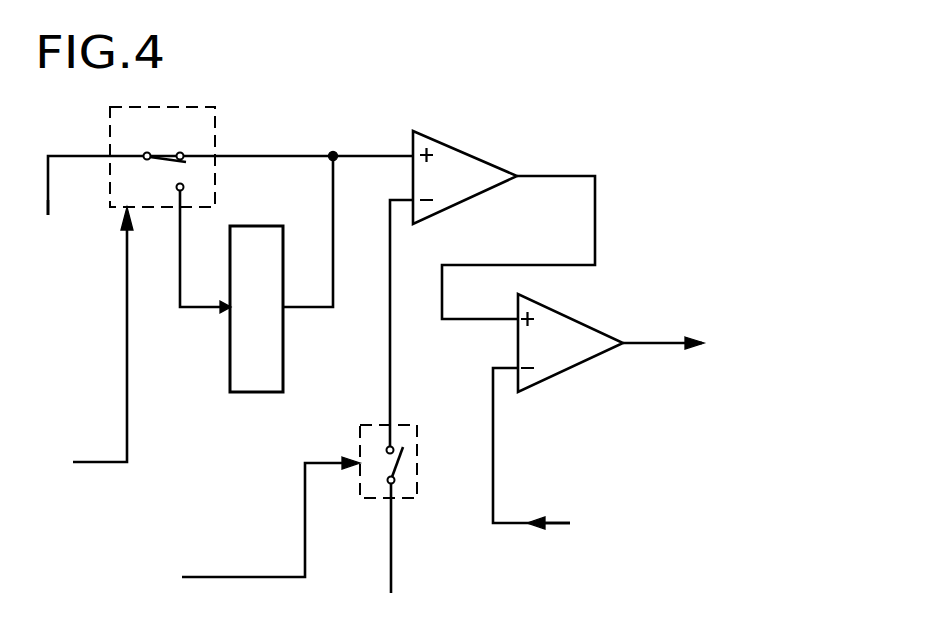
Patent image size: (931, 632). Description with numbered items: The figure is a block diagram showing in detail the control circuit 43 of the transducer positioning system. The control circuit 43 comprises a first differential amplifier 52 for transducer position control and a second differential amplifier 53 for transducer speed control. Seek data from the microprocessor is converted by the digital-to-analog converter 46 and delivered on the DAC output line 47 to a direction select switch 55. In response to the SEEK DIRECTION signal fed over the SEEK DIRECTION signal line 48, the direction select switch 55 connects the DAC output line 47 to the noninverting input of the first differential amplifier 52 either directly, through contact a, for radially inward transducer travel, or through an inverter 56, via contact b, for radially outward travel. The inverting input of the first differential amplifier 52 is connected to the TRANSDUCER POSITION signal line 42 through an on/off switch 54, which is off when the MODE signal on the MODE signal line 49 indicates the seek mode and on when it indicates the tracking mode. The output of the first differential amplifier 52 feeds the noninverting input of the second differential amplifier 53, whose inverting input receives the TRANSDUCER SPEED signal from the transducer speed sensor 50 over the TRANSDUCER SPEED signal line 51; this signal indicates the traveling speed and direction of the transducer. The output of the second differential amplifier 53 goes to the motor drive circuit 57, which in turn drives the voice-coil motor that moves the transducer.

The TRANSDUCER POSITION signal line 42 is at (390, 501).
The control circuit 43 is at (600, 139).
The digital-to-analog converter (DAC) 46 is at (63, 232).
The DAC output line 47 is at (80, 156).
The SEEK DIRECTION signal line 48 is at (128, 364).
The MODE signal line 49 is at (245, 577).
The transducer speed sensor 50 is at (641, 527).
The TRANSDUCER SPEED signal line 51 is at (500, 483).
The first differential amplifier 52 is at (476, 153).
The second differential amplifier 53 is at (606, 314).
The on/off switch 54 is at (417, 425).
The direction select switch 55 is at (215, 152).
The inverter 56 is at (285, 343).
The motor drive circuit 57 is at (756, 344).